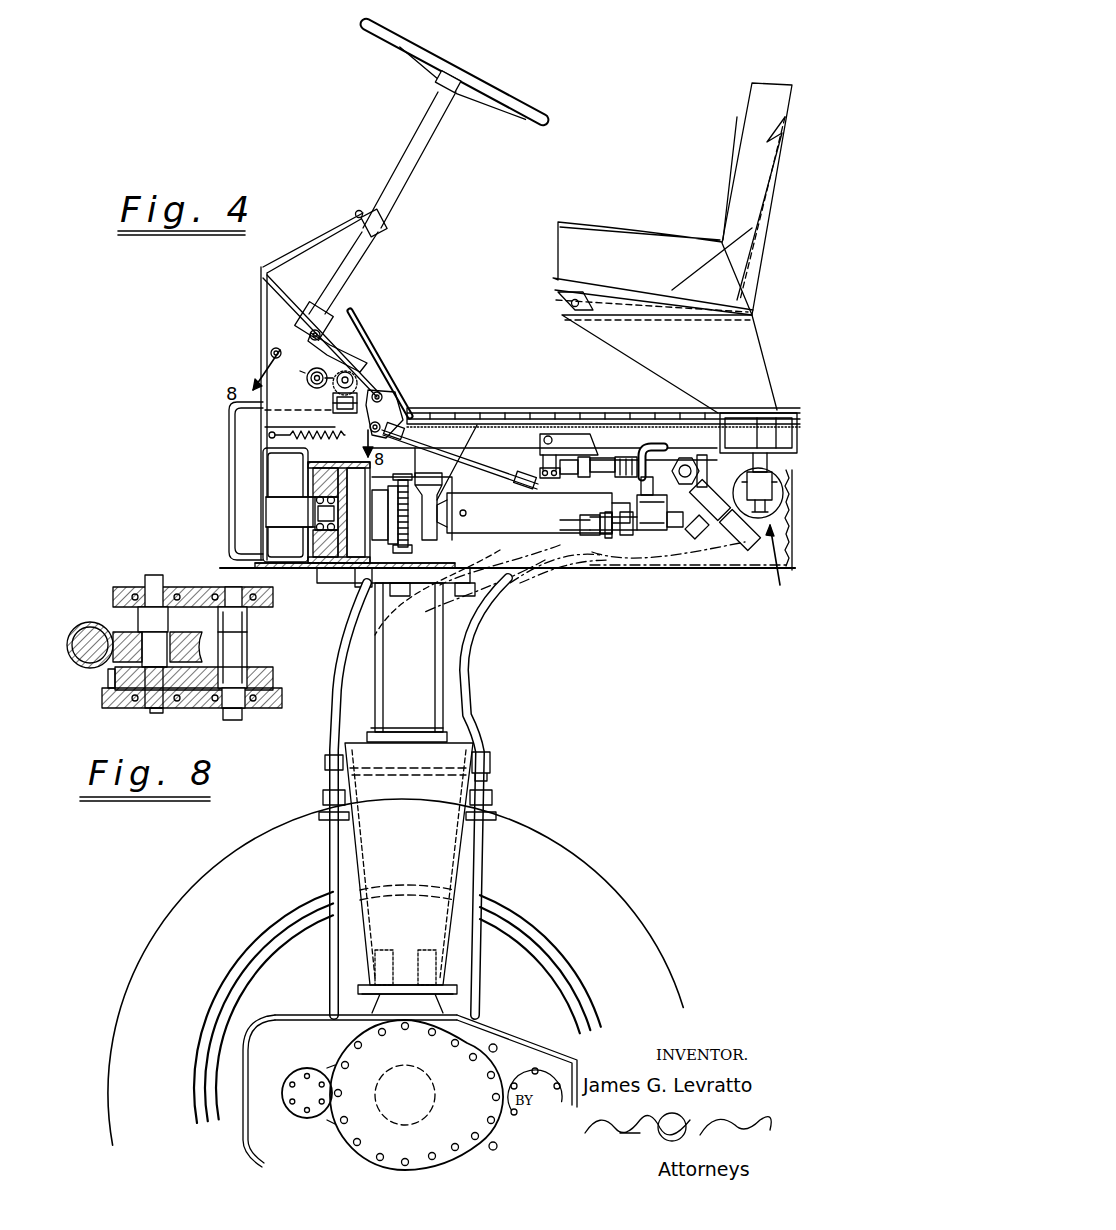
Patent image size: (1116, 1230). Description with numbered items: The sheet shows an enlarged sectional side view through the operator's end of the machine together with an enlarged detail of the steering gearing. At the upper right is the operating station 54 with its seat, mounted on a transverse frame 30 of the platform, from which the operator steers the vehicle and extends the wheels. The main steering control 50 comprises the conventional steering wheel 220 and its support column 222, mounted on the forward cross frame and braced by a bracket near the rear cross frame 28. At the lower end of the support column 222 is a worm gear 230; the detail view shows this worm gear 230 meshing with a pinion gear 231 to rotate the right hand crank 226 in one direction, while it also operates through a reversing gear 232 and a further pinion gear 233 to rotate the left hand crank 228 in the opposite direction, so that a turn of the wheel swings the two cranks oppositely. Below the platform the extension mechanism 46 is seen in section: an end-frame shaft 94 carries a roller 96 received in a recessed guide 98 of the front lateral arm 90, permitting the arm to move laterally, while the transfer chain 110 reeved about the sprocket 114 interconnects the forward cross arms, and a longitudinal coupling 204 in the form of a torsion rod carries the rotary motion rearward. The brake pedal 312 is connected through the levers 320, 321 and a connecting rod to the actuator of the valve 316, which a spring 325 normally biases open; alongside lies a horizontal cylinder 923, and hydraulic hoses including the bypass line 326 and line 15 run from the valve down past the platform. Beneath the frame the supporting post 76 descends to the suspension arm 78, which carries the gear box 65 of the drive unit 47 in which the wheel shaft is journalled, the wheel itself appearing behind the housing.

In FIG. 4, the hydraulic line 15 is at (777, 564).
In FIG. 4, the rear cross frame 28 is at (228, 485).
In FIG. 4, the transverse frame 30 is at (740, 411).
In FIG. 4, the extension mechanism 46 is at (363, 522).
In FIG. 4, the drive unit 47 is at (493, 1025).
In FIG. 4, the main steering control 50 is at (340, 195).
In FIG. 4, the operating station 54 is at (628, 142).
In FIG. 4, the gear box 65 is at (302, 1028).
In FIG. 4, the supporting post 76 is at (433, 650).
In FIG. 4, the suspension arm 78 is at (418, 853).
In FIG. 4, the front lateral arm 90 is at (398, 478).
In FIG. 4, the shaft 94 is at (284, 515).
In FIG. 4, the roller 96 is at (328, 565).
In FIG. 4, the recessed guide 98 is at (352, 565).
In FIG. 4, the transfer chain 110 is at (440, 484).
In FIG. 4, the sprocket 114 is at (412, 552).
In FIG. 4, the longitudinal coupling 204 is at (520, 530).
In FIG. 4, the steering wheel 220 is at (505, 92).
In FIG. 4, the support column 222 is at (410, 165).
In FIG. 8, the support column 222 is at (73, 669).
In FIG. 8, the right hand crank 226 is at (140, 582).
In FIG. 4, the left hand crank 228 is at (314, 388).
In FIG. 8, the left hand crank 228 is at (222, 716).
In FIG. 8, the worm gear 230 is at (70, 630).
In FIG. 8, the pinion gear 231 is at (200, 645).
In FIG. 8, the reversing gear 232 is at (114, 680).
In FIG. 8, the pinion gear 233 is at (276, 683).
In FIG. 4, the brake pedal 312 is at (357, 308).
In FIG. 4, the valve 316 is at (632, 488).
In FIG. 4, the lever 320 is at (390, 402).
In FIG. 4, the lever 321 is at (570, 452).
In FIG. 4, the spring 325 is at (268, 433).
In FIG. 4, the bypass line 326 is at (568, 480).
In FIG. 4, the cylinder 923 is at (507, 482).